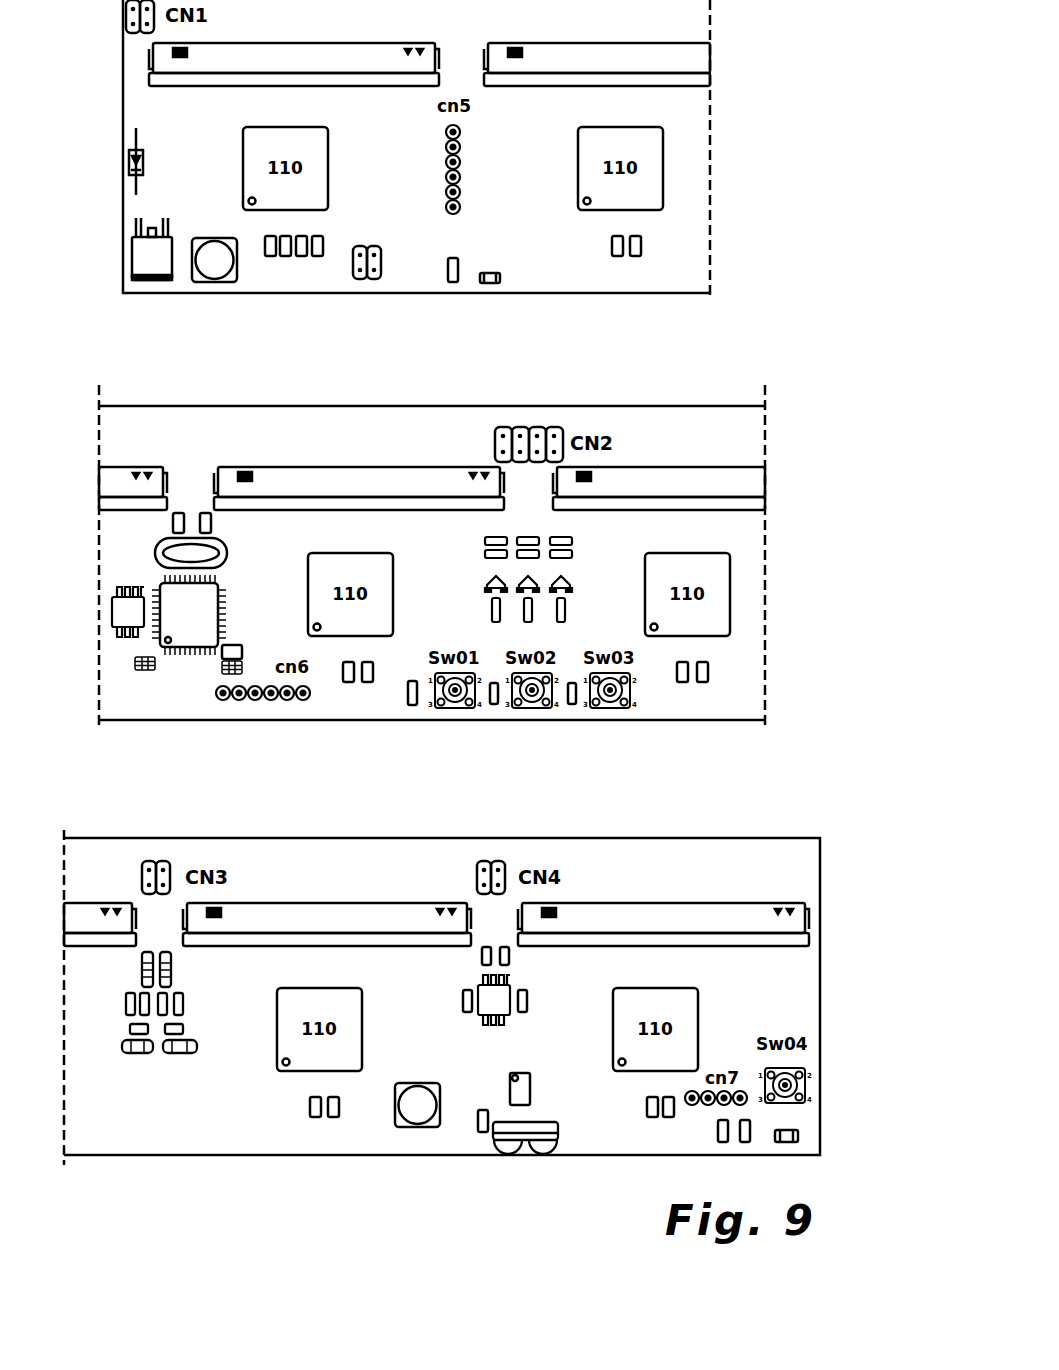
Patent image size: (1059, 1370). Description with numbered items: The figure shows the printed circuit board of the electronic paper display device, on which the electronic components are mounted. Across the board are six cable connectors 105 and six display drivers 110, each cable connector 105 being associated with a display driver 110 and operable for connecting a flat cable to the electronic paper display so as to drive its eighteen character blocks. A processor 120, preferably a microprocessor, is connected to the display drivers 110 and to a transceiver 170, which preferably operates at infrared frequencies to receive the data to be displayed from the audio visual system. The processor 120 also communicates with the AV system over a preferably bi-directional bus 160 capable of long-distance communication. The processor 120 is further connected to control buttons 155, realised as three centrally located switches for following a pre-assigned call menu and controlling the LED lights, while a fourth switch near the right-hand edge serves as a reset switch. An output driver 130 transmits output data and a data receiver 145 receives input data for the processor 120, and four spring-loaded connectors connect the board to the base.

The cable connector 105 is at (436, 494).
The electronic paper display driver 110 is at (486, 599).
The processor 120 is at (189, 615).
The output driver 130 is at (528, 568).
The data receiver 145 is at (144, 1002).
The control button 155 is at (432, 567).
The bus 160 is at (506, 986).
The transceiver 170 is at (528, 1169).